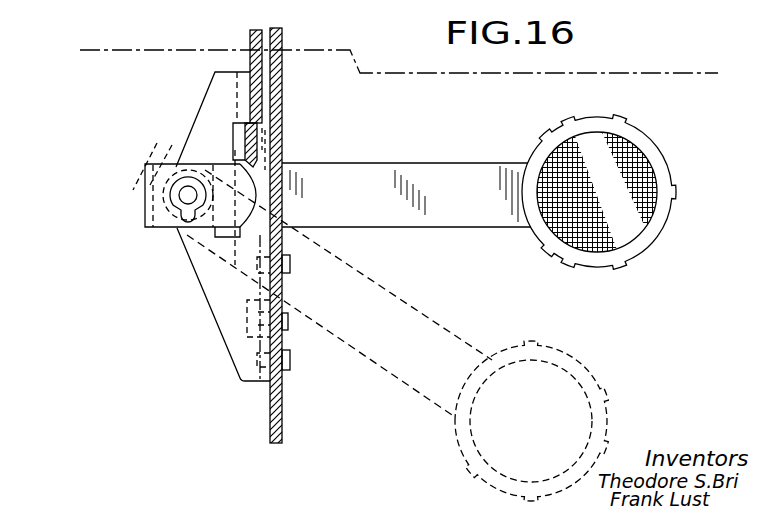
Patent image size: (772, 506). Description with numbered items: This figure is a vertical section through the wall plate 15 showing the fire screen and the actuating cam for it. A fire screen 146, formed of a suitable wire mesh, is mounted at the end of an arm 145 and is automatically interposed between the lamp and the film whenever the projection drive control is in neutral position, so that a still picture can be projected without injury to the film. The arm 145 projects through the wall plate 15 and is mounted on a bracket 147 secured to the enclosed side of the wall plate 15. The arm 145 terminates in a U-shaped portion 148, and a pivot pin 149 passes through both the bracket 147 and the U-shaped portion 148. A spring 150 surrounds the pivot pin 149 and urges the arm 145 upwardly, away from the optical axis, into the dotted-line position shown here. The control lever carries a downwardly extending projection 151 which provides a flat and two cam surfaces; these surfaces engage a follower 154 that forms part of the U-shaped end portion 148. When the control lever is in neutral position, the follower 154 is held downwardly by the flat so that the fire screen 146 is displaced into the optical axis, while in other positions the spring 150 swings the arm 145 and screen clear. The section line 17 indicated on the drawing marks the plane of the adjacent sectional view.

The wall plate 15 is at (282, 117).
The section line 17- 17 is at (96, 31).
The arm 145 is at (418, 166).
The fire screen 146 is at (626, 168).
The bracket 147 is at (213, 310).
The U-shaped portion 148 is at (143, 203).
The pivot pin 149 is at (188, 216).
The spring 150 is at (149, 158).
The projection 151 is at (250, 37).
The follower 154 is at (243, 162).